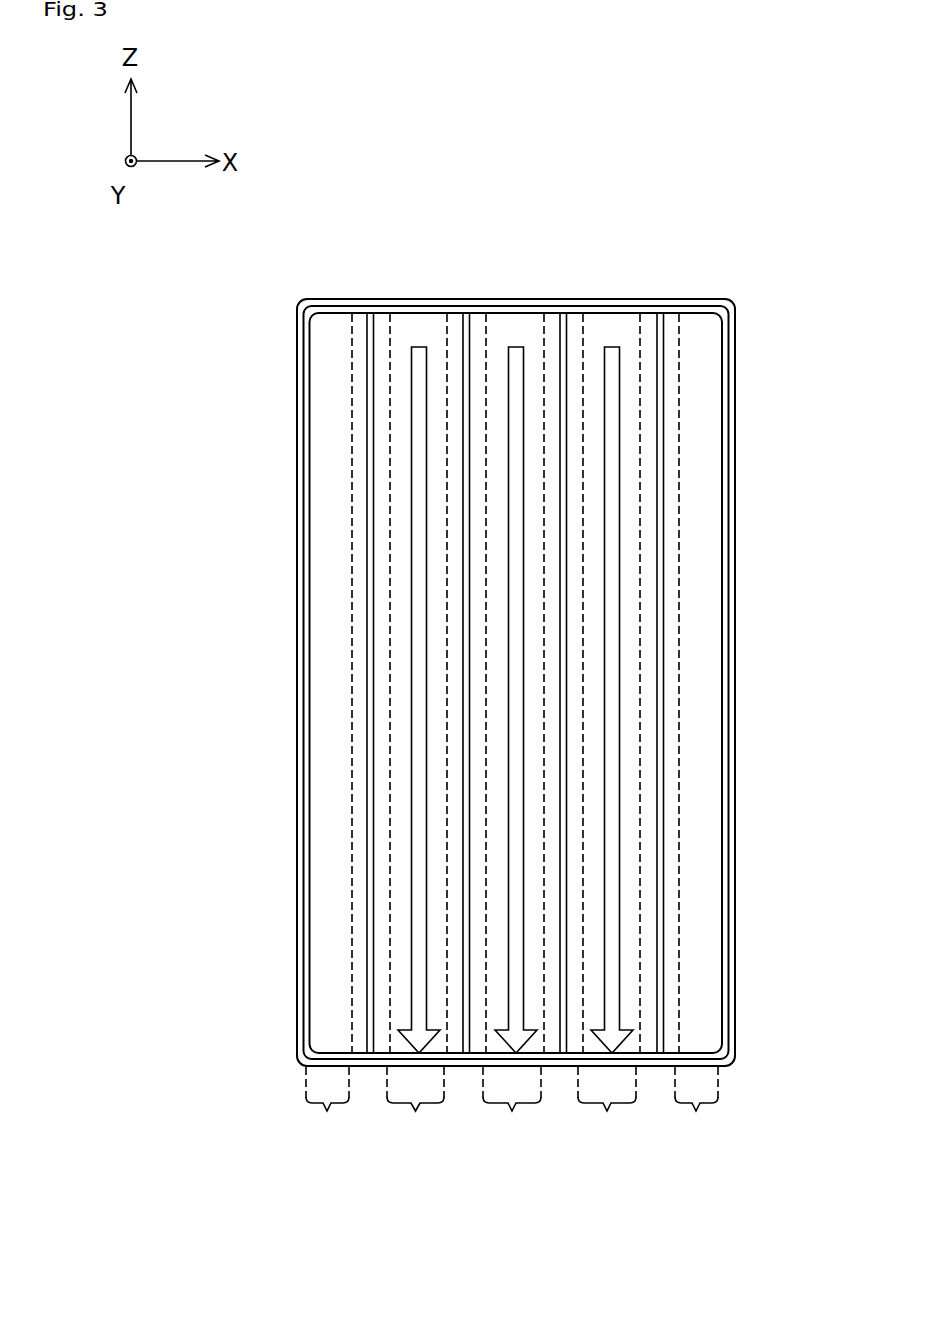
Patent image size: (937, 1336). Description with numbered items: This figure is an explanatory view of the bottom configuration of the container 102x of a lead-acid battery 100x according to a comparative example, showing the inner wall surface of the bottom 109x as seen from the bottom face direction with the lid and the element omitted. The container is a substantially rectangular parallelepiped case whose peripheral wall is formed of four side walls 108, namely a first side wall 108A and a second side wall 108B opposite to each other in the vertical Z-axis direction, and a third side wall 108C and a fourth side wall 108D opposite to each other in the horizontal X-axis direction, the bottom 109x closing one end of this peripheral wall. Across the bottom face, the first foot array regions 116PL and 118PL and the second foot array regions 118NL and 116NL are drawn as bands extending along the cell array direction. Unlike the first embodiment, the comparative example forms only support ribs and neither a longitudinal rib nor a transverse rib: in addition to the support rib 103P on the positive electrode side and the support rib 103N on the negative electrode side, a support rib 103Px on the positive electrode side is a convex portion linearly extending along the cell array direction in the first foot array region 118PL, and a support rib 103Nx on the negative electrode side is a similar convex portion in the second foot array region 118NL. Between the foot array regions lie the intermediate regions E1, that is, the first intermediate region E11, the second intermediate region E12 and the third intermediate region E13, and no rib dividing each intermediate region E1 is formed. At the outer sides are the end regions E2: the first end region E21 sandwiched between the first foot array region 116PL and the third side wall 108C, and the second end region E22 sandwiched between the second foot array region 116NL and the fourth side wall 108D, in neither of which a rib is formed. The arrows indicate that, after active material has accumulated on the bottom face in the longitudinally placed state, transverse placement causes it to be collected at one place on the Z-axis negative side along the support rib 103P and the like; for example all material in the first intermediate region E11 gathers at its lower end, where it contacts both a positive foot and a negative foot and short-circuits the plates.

The lead-acid battery 100x is at (711, 139).
The container 102x is at (810, 189).
The side walls 108 is at (512, 718).
The first side wall 108A is at (637, 299).
The second side wall 108B is at (557, 1067).
The third side wall 108C is at (297, 876).
The fourth side wall 108D is at (735, 855).
The bottom 109x is at (708, 749).
The first foot array region 116PL is at (359, 299).
The second foot array region 118NL is at (462, 299).
The first foot array region 118PL is at (569, 299).
The second foot array region 116NL is at (677, 299).
The support rib on the positive electrode side 103P is at (366, 450).
The support rib on the negative electrode side 103N is at (658, 449).
The support rib on the positive electrode side 103Px is at (558, 664).
The support rib on the negative electrode side 103Nx is at (470, 534).
The intermediate region E1 is at (511, 761).
The first intermediate region E11 is at (415, 761).
The second intermediate region E12 is at (512, 761).
The third intermediate region E13 is at (607, 761).
The end region E2 is at (510, 1121).
The first end region E21 is at (323, 1121).
The second end region E22 is at (697, 1121).